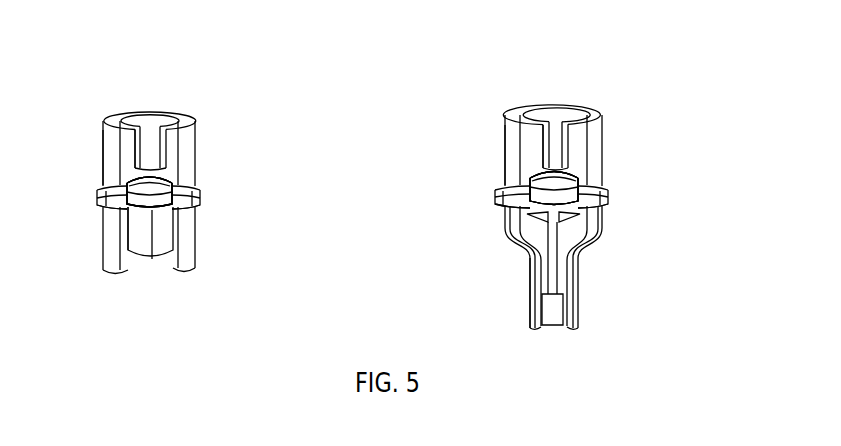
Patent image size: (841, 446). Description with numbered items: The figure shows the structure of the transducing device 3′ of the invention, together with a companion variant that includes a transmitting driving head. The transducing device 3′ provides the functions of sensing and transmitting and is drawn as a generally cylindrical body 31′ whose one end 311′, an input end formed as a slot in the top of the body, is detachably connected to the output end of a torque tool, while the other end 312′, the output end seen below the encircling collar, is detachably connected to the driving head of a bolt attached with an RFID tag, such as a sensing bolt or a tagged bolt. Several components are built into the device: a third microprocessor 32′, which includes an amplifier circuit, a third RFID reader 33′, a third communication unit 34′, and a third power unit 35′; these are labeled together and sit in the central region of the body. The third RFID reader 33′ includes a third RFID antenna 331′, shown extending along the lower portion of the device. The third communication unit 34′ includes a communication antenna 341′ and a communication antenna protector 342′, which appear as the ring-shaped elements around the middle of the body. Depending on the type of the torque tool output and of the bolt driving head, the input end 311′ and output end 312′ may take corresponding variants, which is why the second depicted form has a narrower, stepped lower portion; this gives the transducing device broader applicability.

The transducing device 3′ is at (180, 96).
The cylindrical body 31′ is at (103, 155).
The end (input end) 311′ is at (143, 123).
The other end (output end) 312′ is at (166, 244).
The third RFID antenna 331′ is at (141, 208).
The communication antenna 341′ is at (197, 195).
The communication antenna protector 342′ is at (100, 192).
The third microprocessor 32′ is at (156, 181).
The third RFID reader 33′ is at (213, 155).
The third communication unit 34′ is at (234, 155).
The third power unit 35′ is at (252, 155).